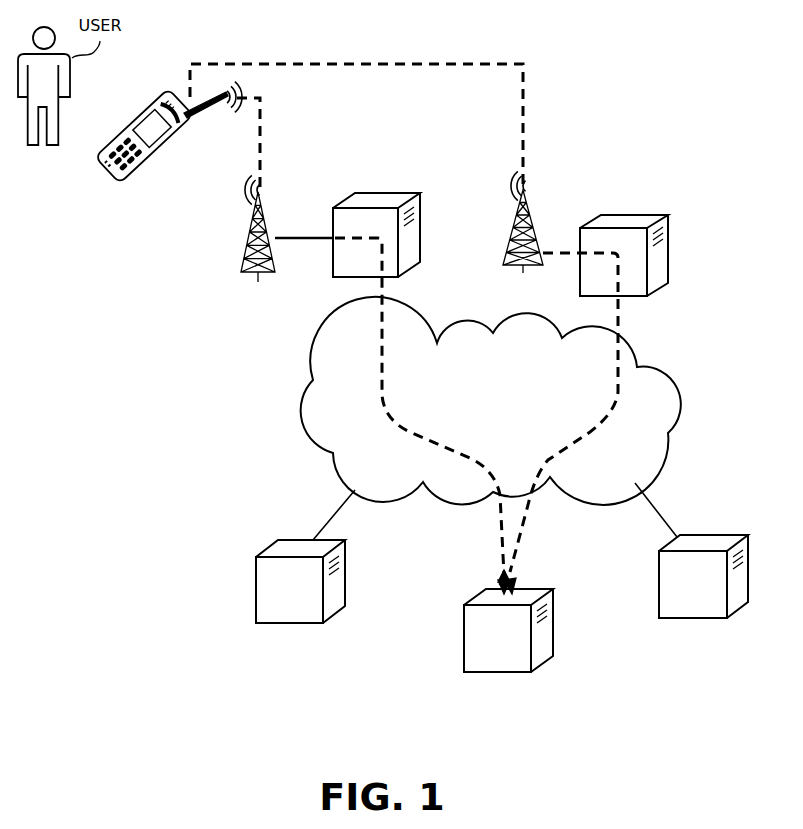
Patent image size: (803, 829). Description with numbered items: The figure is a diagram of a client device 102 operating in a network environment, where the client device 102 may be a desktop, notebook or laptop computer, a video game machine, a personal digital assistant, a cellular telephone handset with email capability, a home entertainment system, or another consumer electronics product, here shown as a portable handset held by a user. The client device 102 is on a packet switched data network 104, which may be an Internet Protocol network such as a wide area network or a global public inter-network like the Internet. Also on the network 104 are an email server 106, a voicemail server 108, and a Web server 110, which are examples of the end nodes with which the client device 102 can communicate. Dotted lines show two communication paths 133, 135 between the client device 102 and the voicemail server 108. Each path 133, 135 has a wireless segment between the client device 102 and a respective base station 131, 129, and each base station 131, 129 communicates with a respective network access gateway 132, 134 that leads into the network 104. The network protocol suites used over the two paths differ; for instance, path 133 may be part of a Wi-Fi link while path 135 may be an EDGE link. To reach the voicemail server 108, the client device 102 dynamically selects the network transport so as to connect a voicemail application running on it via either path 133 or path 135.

The client device 102 is at (106, 137).
The packet switched data network 104 is at (702, 393).
The email server 106 is at (290, 625).
The voicemail server 108 is at (494, 674).
The Web server 110 is at (681, 620).
The base station 129 is at (528, 200).
The base station 131 is at (245, 270).
The network access gateway 132 is at (421, 238).
The communication path 133 is at (262, 136).
The network access gateway 134 is at (669, 248).
The communication path 135 is at (433, 63).